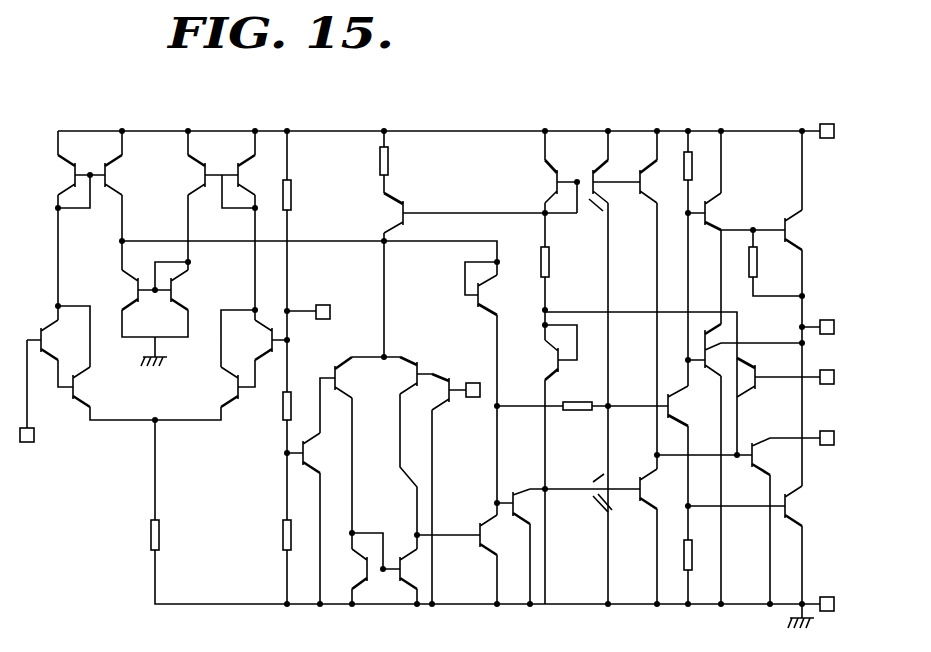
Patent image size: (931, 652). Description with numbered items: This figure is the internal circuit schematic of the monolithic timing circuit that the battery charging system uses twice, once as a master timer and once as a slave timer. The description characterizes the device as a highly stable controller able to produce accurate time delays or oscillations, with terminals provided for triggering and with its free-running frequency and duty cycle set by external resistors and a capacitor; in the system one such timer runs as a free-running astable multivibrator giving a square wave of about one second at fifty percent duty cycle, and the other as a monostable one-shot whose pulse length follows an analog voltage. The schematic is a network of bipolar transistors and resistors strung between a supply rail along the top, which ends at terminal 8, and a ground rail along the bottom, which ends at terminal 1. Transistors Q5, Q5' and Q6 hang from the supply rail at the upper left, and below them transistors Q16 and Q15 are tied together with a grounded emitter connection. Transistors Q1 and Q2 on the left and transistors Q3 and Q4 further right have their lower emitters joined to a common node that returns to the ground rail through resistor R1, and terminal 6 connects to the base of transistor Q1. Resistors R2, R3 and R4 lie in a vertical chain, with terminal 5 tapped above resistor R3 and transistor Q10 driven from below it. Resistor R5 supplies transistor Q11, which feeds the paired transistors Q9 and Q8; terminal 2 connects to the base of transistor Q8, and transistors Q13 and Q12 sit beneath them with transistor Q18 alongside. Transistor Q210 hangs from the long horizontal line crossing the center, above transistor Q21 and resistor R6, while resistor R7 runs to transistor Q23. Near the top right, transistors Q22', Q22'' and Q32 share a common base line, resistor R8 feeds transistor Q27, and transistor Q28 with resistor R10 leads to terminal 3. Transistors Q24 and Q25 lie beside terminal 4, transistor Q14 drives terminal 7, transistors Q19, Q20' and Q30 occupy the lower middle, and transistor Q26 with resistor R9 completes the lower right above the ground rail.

The transistor Q1 is at (56, 340).
The transistor Q2 is at (91, 387).
The transistor Q3 is at (222, 387).
The transistor Q4 is at (256, 340).
The transistor Q5 is at (55, 175).
The transistor Q5' is at (123, 175).
The transistor Q6 is at (221, 175).
The transistor Q8 is at (421, 383).
The transistor Q9 is at (347, 377).
The transistor Q10 is at (320, 453).
The transistor Q11 is at (382, 213).
The transistor Q12 is at (413, 569).
The transistor Q13 is at (351, 569).
The transistor Q14 is at (769, 456).
The transistor Q15 is at (188, 290).
The transistor Q16 is at (121, 290).
The transistor Q18 is at (495, 535).
The transistor Q19 is at (529, 506).
The transistor Q20' is at (587, 493).
The transistor Q21 is at (544, 360).
The transistor Q22' is at (536, 181).
The transistor Q22'' is at (612, 185).
The transistor Q23 is at (683, 406).
The transistor Q24 is at (719, 350).
The transistor Q25 is at (759, 377).
The transistor Q26 is at (798, 506).
The transistor Q27 is at (719, 211).
The transistor Q28 is at (802, 230).
The transistor Q30 is at (654, 489).
The transistor Q32 is at (655, 181).
The transistor Q210 is at (497, 295).
The resistor 10 kOhm R1 is at (174, 535).
The resistor 5 kOhm R2 is at (302, 195).
The resistor 5 kOhm R3 is at (271, 406).
The resistor 5 kOhm R4 is at (272, 535).
The resistor 0.8 kOhm R5 is at (406, 160).
The resistor 14 kOhm R6 is at (564, 262).
The resistor 7.5 kOhm R7 is at (580, 420).
The resistor 6.4 kOhm R8 is at (709, 165).
The resistor 7.15 kOhm R9 is at (713, 554).
The resistor 4.9 kOhm R10 is at (773, 261).
The GND pin 1 is at (823, 596).
The Trigger pin 2 is at (470, 400).
The Output pin 3 is at (839, 316).
The Reset pin 4 is at (835, 367).
The pin 5 is at (344, 310).
The Threshold pin 6 is at (26, 445).
The Discharge pin 7 is at (835, 429).
The VCC pin 8 is at (824, 141).